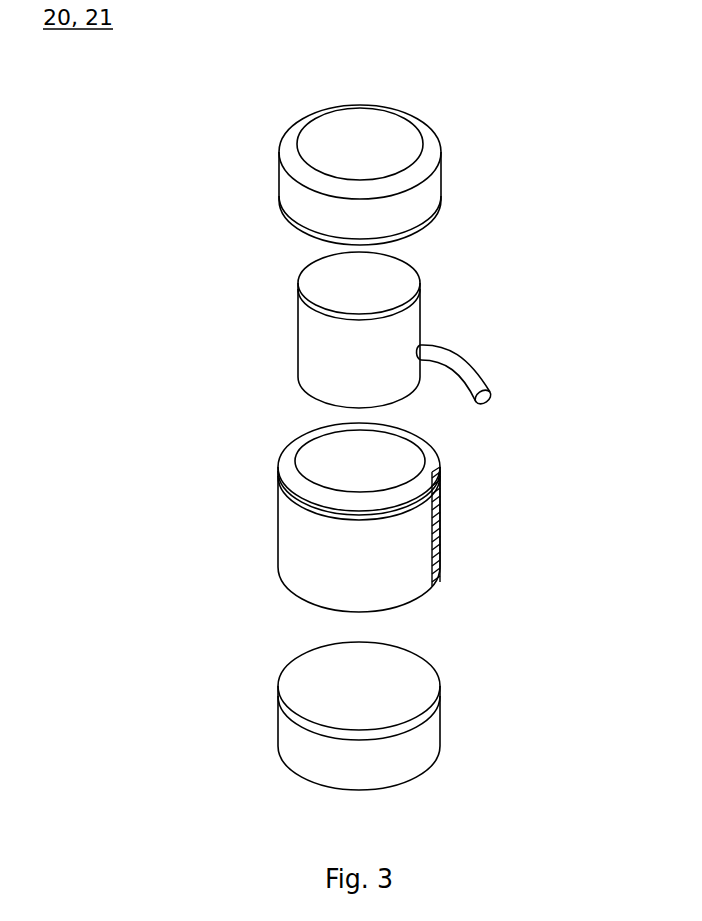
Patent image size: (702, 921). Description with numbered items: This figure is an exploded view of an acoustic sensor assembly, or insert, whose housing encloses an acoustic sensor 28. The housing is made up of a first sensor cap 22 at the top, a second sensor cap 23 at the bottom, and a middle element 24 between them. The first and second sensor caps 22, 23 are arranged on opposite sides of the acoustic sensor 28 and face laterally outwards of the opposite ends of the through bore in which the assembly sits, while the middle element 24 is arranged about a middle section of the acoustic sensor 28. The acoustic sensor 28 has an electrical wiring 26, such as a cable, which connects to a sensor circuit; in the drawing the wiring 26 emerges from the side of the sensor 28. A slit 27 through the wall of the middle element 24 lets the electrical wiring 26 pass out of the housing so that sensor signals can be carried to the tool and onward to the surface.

The first end 22 is at (283, 175).
The second end 23 is at (271, 716).
The middle element 24 is at (287, 517).
The electrical wiring 26 is at (496, 360).
The slit 27 is at (492, 524).
The acoustic sensor 28 is at (277, 330).